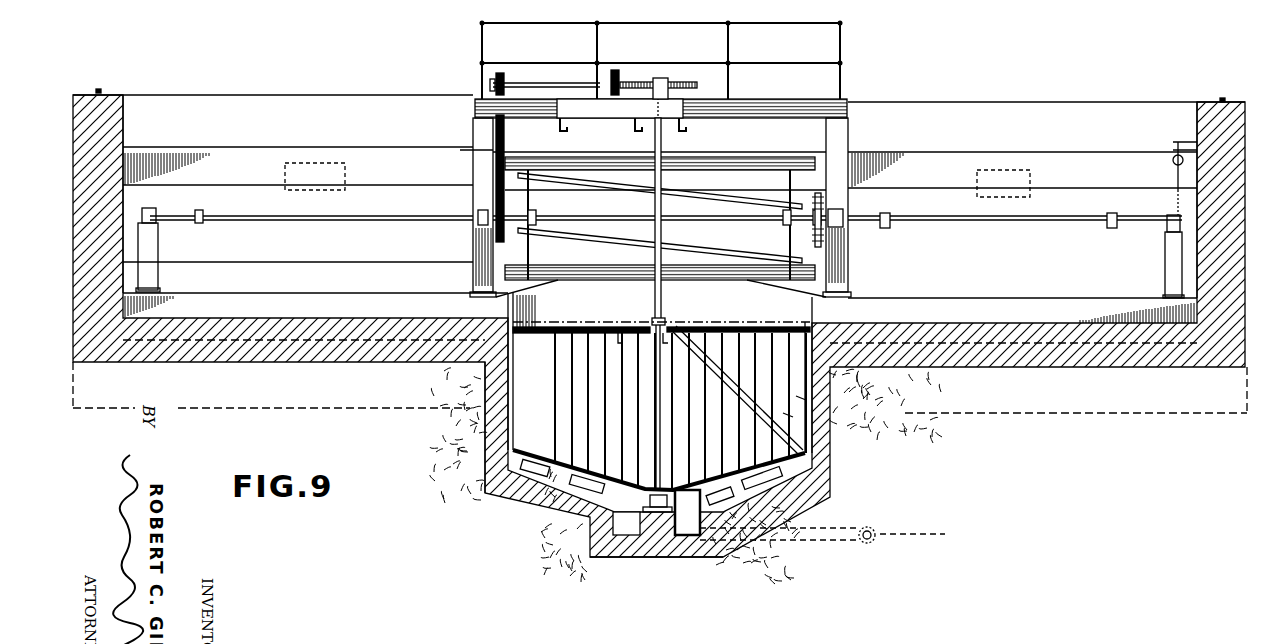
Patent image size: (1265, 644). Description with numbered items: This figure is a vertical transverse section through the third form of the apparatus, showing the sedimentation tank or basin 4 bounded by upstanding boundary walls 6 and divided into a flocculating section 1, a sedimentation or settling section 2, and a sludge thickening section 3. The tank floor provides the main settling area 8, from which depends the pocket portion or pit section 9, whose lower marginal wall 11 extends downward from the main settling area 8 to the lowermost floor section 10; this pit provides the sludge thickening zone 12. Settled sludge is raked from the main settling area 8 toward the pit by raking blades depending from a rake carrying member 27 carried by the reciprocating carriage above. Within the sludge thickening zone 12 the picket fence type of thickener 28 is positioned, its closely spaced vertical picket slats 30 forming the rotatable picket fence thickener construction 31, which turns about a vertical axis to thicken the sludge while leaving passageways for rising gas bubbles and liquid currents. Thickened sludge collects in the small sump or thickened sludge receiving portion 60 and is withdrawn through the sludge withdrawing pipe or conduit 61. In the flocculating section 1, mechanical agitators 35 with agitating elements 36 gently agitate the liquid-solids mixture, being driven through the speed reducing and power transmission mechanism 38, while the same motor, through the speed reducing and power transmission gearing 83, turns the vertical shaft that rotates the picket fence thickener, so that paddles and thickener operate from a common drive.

The flocculating section 1 is at (298, 206).
The sedimentation or settling section 2 is at (659, 326).
The sludge thickening section 3 is at (490, 483).
The sedimentation tank or basin 4 is at (1022, 212).
The upstanding boundary walls 6 is at (1205, 258).
The main settling area 8 is at (228, 333).
The pocket portion or pit section 9 is at (792, 472).
The lowermost floor section 10 is at (743, 500).
The lower marginal wall 11 is at (487, 432).
The sludge thickening zone 12 is at (659, 411).
The rake carrying member 27 is at (808, 453).
The picket fence type of thickener 28 is at (543, 398).
The picket slats 30 is at (740, 332).
The picket fence thickener construction 31 is at (787, 415).
The mechanical agitators 35 is at (660, 216).
The mechanical agitating elements 36 is at (540, 272).
The speed reducing and power transmission mechanism 38 is at (553, 85).
The small sump or thickened sludge receiving portion 60 is at (633, 530).
The sludge withdrawing pipe or conduit 61 is at (845, 538).
The speed reducing and power transmission gearing 83 is at (641, 82).